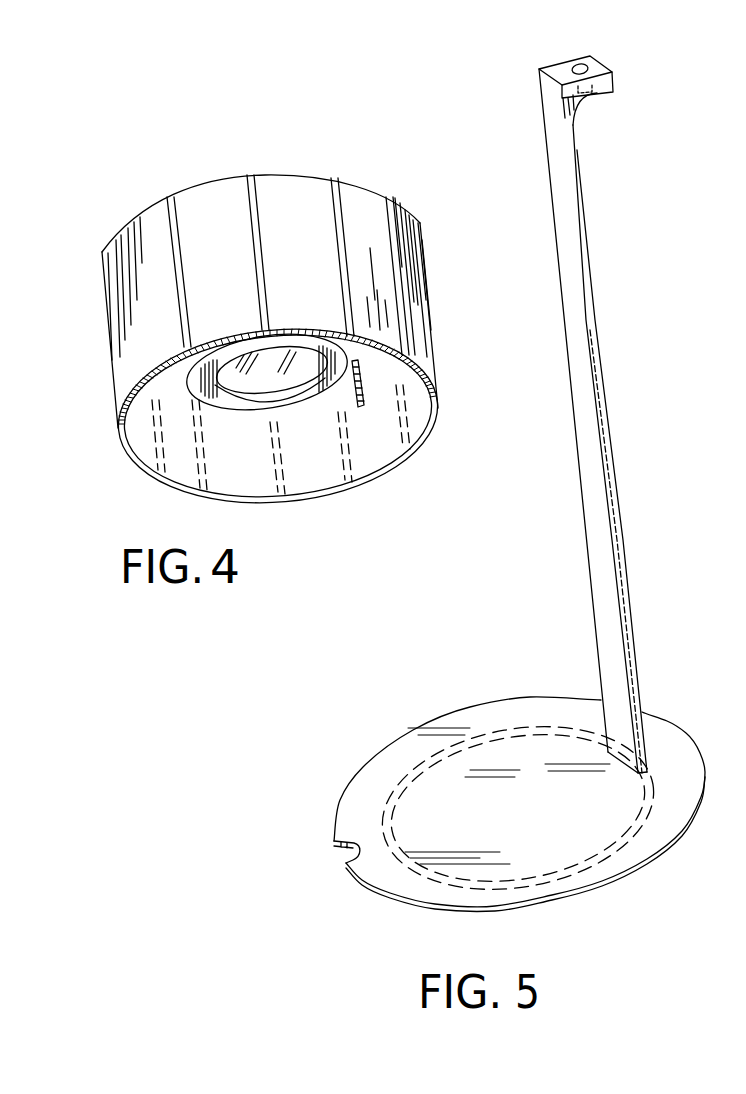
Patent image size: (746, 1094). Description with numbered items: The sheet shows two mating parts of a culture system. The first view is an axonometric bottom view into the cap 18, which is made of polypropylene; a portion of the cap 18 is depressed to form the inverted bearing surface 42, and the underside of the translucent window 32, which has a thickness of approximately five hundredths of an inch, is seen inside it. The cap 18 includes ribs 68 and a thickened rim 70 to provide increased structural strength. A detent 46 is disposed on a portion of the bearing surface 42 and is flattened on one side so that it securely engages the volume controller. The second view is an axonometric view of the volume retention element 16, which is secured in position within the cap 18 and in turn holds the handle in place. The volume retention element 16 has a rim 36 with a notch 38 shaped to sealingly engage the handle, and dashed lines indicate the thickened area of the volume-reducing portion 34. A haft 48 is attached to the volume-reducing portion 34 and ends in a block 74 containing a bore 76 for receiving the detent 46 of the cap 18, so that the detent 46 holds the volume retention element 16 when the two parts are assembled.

In FIG. 5, the volume retention element 16 is at (652, 654).
In FIG. 4, the cap 18 is at (82, 419).
In FIG. 4, the translucent window 32 is at (302, 352).
In FIG. 5, the volume-reducing portion 34 is at (553, 867).
In FIG. 5, the rim 36 is at (460, 908).
In FIG. 5, the notch 38 is at (332, 863).
In FIG. 4, the inverted bearing surface 42 is at (187, 383).
In FIG. 4, the detent 46 is at (365, 398).
In FIG. 5, the haft 48 is at (598, 566).
In FIG. 4, the ribs 68 is at (157, 458).
In FIG. 4, the thickened rim 70 is at (378, 475).
In FIG. 5, the block 74 is at (614, 82).
In FIG. 5, the bore 76 is at (585, 64).